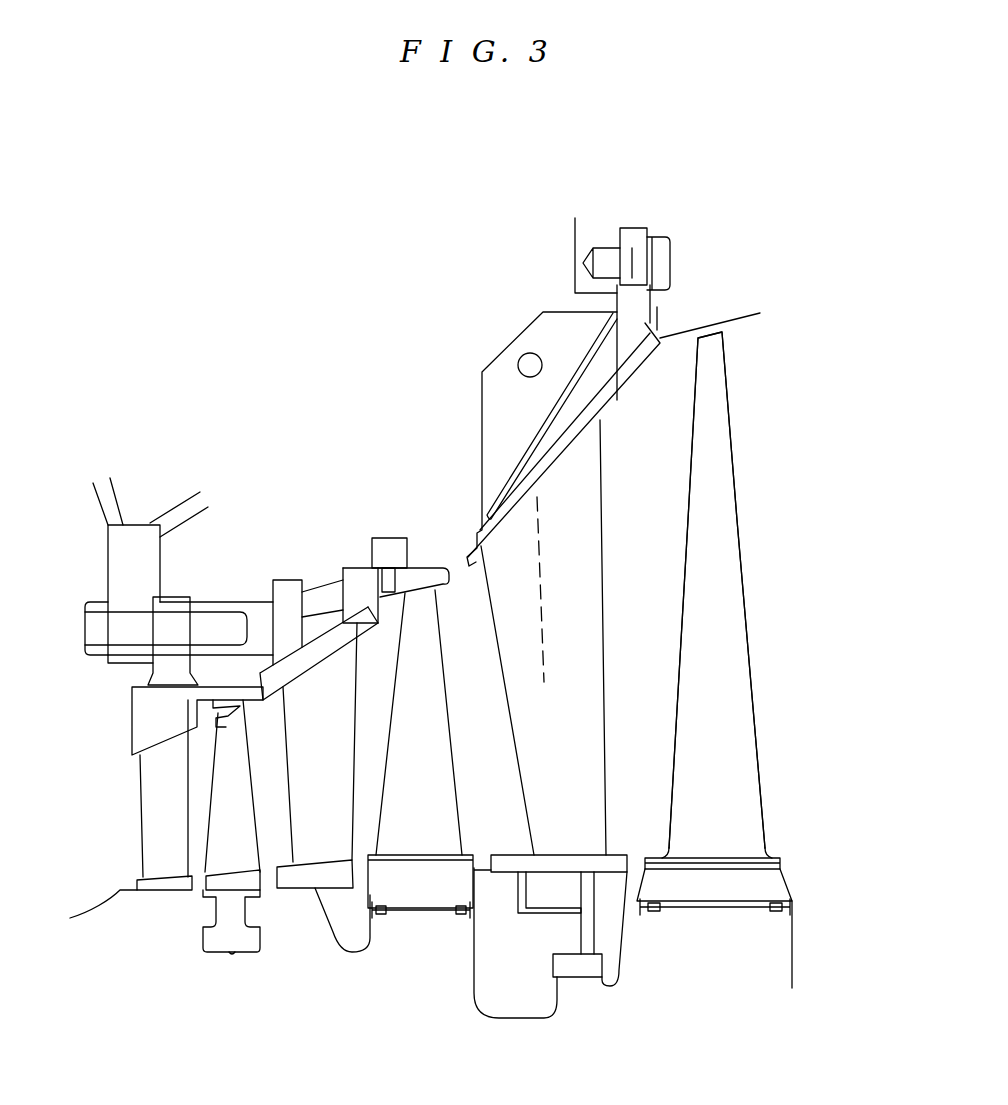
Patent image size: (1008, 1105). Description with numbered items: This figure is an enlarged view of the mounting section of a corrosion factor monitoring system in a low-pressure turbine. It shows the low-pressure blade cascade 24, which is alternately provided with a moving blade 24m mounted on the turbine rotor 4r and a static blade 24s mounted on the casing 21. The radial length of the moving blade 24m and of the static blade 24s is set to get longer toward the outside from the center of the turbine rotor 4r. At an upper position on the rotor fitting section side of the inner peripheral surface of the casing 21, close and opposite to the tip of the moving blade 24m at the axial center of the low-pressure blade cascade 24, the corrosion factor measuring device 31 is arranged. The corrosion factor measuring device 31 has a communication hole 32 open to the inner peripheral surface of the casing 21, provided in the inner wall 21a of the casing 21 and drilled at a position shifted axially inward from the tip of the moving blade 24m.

The low-pressure blade cascade 24 is at (752, 436).
The moving blade 24m is at (222, 805).
The static blade 24s is at (153, 850).
The casing 21 is at (132, 718).
The inner wall 21a is at (423, 570).
The corrosion factor measuring device 31 is at (390, 545).
The communication hole 32 is at (378, 587).
The turbine rotor 4r is at (782, 960).